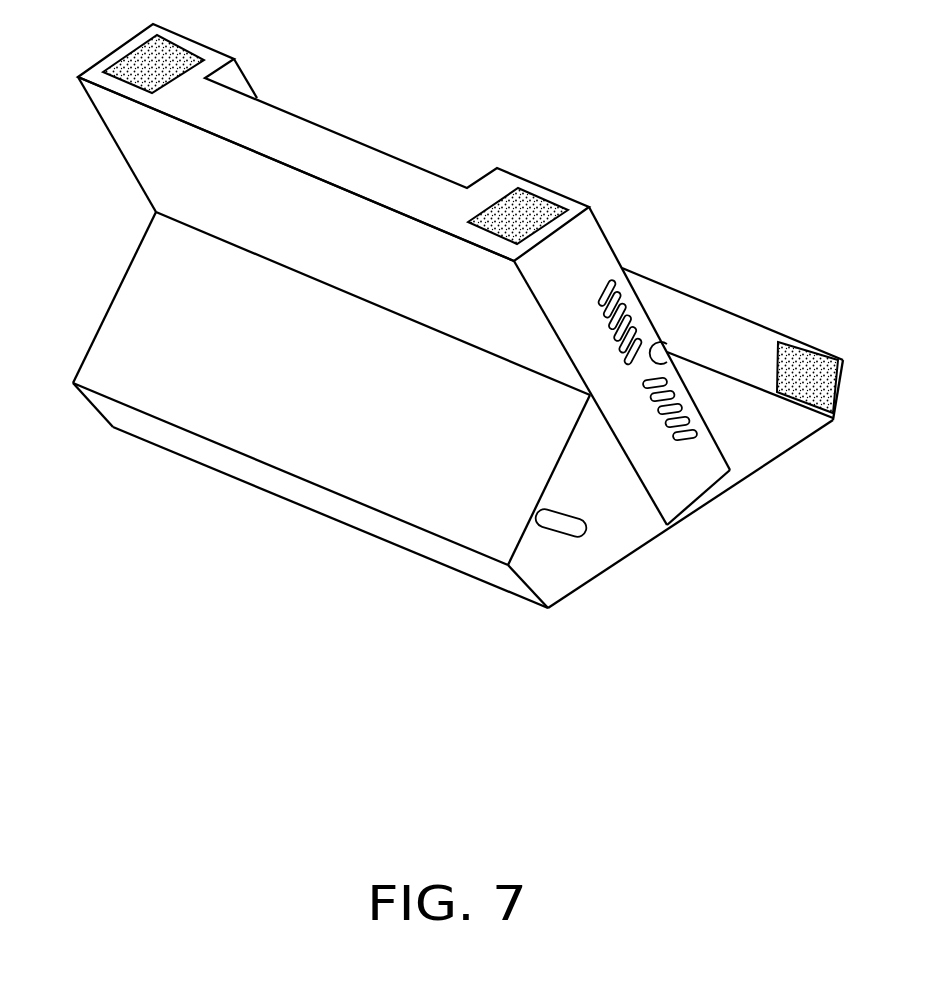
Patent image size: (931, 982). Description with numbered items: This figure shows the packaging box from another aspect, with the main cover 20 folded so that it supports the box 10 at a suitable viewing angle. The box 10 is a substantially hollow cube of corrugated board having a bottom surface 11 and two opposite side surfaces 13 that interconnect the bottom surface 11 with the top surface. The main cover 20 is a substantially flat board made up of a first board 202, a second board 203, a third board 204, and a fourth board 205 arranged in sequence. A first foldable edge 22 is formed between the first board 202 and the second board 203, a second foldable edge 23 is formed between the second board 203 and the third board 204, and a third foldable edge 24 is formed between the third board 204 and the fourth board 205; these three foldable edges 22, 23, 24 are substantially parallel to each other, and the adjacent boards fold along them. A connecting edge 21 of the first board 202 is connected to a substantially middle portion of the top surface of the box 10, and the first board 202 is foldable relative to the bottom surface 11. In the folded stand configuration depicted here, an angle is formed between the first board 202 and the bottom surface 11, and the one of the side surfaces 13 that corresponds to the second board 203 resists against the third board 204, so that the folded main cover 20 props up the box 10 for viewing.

The box 10 is at (583, 255).
The bottom surface 11 is at (147, 143).
The side surfaces 13 is at (415, 188).
The main cover 20 is at (633, 559).
The connecting edge 21 is at (215, 238).
The first foldable edge 22 is at (242, 455).
The second foldable edge 23 is at (443, 567).
The third foldable edge 24 is at (803, 407).
The first board 202 is at (160, 353).
The second board 203 is at (370, 520).
The third board 204 is at (748, 463).
The fourth board 205 is at (735, 337).